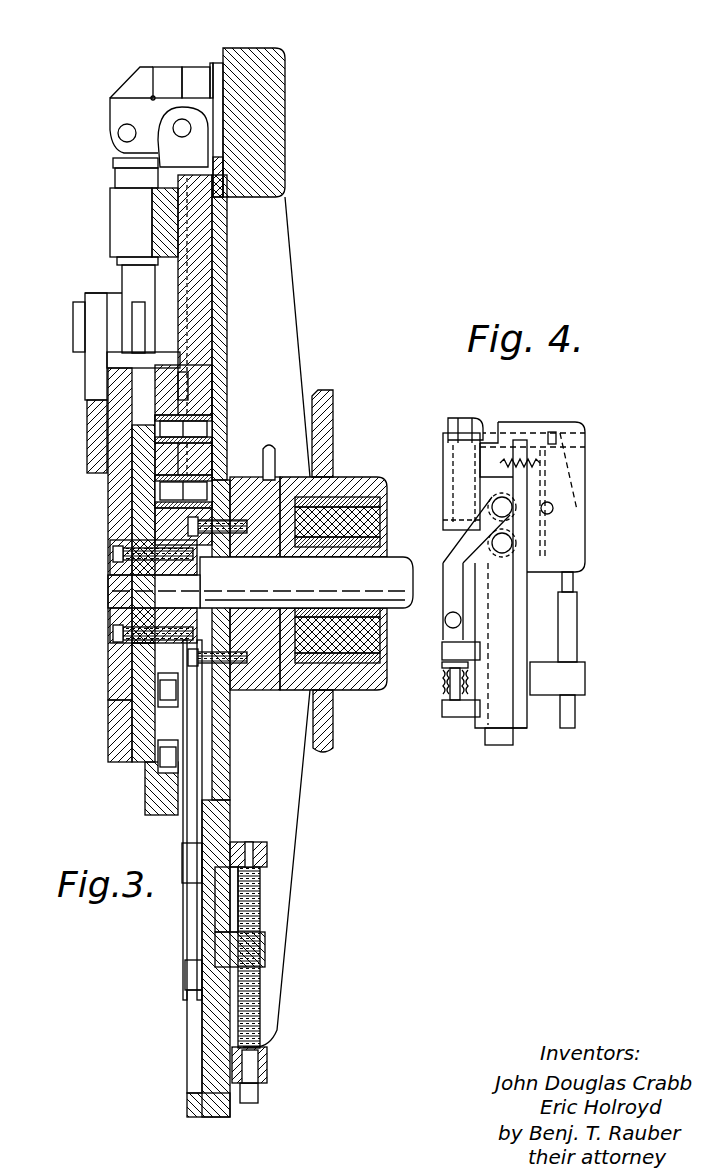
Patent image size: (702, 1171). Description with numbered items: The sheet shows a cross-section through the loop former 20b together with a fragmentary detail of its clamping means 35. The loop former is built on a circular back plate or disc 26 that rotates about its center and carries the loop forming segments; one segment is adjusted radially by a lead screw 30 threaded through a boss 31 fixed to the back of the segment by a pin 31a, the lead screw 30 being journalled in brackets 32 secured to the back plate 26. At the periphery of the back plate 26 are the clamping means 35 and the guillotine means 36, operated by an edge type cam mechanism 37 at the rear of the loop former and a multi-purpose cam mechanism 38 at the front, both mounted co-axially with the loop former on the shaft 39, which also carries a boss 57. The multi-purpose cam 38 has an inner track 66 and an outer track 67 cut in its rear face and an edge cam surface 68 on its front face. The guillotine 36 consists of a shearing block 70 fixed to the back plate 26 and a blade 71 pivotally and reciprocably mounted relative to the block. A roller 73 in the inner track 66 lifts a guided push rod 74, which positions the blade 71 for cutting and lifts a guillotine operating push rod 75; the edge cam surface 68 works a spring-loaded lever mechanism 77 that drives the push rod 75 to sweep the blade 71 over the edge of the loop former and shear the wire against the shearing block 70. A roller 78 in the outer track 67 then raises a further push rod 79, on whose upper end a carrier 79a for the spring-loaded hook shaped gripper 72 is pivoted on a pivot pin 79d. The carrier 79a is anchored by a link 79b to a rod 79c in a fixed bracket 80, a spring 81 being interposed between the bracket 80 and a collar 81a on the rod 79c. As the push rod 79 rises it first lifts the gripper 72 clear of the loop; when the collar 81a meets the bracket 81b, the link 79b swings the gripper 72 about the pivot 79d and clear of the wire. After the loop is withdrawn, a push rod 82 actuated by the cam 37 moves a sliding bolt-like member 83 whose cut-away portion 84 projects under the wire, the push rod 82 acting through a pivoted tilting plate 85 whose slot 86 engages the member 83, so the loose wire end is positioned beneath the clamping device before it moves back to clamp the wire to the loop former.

In FIG. 3, the loop former 20b is at (262, 810).
In FIG. 3, the back plate 26 is at (218, 62).
In FIG. 3, the lead screw 30 is at (260, 923).
In FIG. 3, the boss 31 is at (215, 947).
In FIG. 3, the pin 31a is at (215, 952).
In FIG. 3, the brackets 32 is at (250, 843).
In FIG. 4, the clamping means 35 is at (585, 437).
In FIG. 3, the guillotine means 36 is at (108, 81).
In FIG. 3, the edge type cam mechanism 37 is at (272, 630).
In FIG. 3, the multi-purpose cam mechanism 38 is at (108, 717).
In FIG. 3, the shaft 39 is at (392, 567).
In FIG. 3, the boss 57 is at (380, 505).
In FIG. 3, the inner track 66 is at (142, 707).
In FIG. 3, the outer track 67 is at (158, 770).
In FIG. 3, the edge cam surface 68 is at (118, 763).
In FIG. 3, the shearing block 70 is at (196, 64).
In FIG. 3, the blade 71 is at (163, 65).
In FIG. 4, the hook shaped gripper 72 is at (452, 425).
In FIG. 3, the roller 73 is at (162, 488).
In FIG. 3, the guided push rod 74 is at (200, 138).
In FIG. 3, the guillotine operating push rod 75 is at (130, 162).
In FIG. 3, the spring-loaded lever mechanism 77 is at (92, 447).
In FIG. 3, the roller 78 is at (200, 406).
In FIG. 3, the push rod 79 is at (190, 380).
In FIG. 4, the push rod 79 is at (500, 560).
In FIG. 4, the carrier 79a is at (442, 482).
In FIG. 4, the link 79b is at (452, 590).
In FIG. 4, the rod 79c is at (513, 745).
In FIG. 4, the pivot pin 79d is at (520, 520).
In FIG. 4, the fixed bracket 80 is at (457, 718).
In FIG. 4, the spring 81 is at (443, 680).
In FIG. 4, the collar 81a is at (442, 665).
In FIG. 4, the bracket 81b is at (470, 650).
In FIG. 3, the push rod 82 is at (268, 464).
In FIG. 4, the push rod 82 is at (573, 618).
In FIG. 4, the sliding bolt-like member 83 is at (573, 428).
In FIG. 4, the cut-away portion 84 is at (486, 446).
In FIG. 4, the pivoted tilting plate 85 is at (557, 488).
In FIG. 4, the slot 86 is at (552, 432).